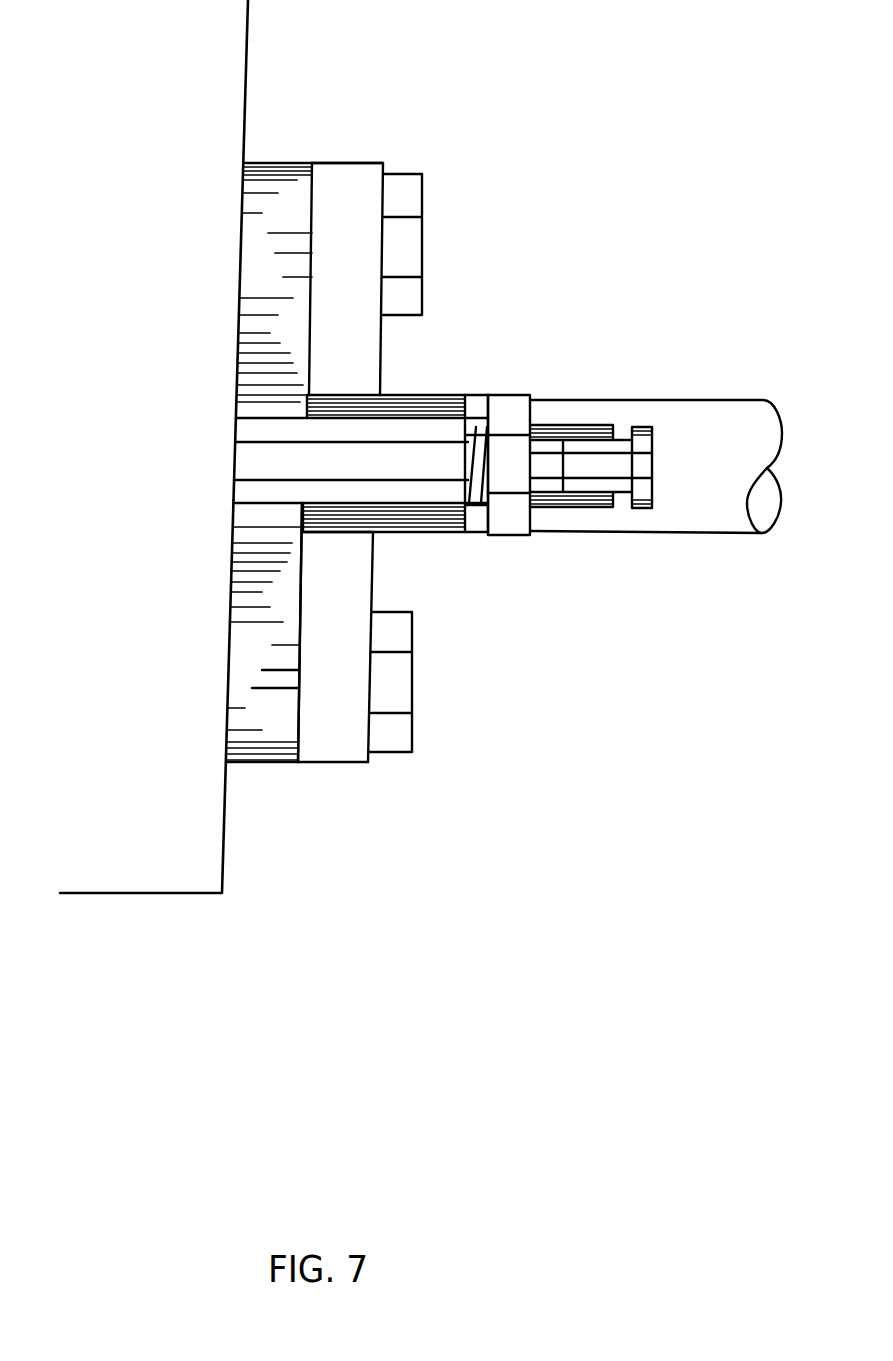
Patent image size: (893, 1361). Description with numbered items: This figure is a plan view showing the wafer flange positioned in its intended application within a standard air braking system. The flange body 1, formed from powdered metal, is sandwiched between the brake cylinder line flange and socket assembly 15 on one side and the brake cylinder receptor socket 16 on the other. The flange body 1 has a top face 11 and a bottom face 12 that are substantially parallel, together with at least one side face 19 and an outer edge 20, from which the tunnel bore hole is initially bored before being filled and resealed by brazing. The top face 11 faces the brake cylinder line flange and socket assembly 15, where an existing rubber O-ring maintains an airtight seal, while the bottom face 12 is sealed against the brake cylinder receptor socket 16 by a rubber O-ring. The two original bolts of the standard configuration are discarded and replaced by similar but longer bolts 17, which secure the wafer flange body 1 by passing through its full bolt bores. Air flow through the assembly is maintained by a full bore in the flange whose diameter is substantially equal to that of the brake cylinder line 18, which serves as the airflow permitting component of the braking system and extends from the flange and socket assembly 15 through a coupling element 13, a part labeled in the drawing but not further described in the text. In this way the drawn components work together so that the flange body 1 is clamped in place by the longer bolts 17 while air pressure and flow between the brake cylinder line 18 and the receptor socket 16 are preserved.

The flange body 1 is at (272, 183).
The top face 11 is at (297, 728).
The bottom face 12 is at (228, 698).
The coupling connector 13 is at (572, 433).
The brake cylinder line flange and socket assembly 15 is at (347, 185).
The brake cylinder receptor socket 16 is at (237, 60).
The longer bolts 17 is at (412, 250).
The brake cylinder line 18 is at (687, 415).
The side face 19 is at (263, 672).
The outer edge 20 is at (262, 463).